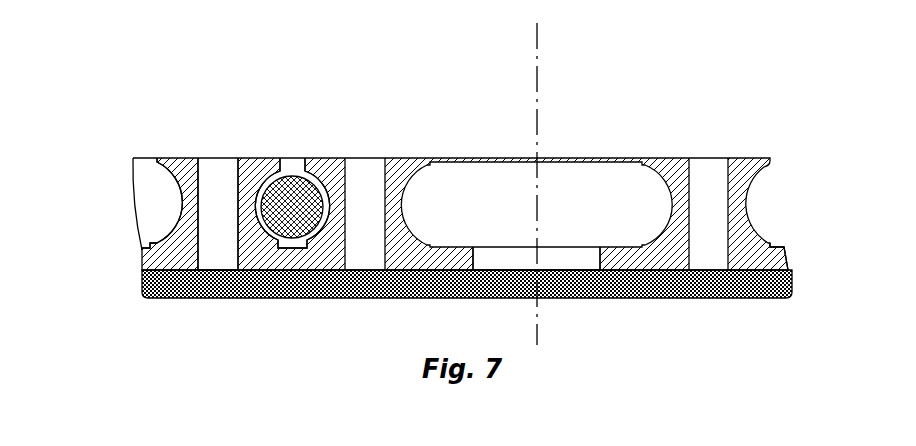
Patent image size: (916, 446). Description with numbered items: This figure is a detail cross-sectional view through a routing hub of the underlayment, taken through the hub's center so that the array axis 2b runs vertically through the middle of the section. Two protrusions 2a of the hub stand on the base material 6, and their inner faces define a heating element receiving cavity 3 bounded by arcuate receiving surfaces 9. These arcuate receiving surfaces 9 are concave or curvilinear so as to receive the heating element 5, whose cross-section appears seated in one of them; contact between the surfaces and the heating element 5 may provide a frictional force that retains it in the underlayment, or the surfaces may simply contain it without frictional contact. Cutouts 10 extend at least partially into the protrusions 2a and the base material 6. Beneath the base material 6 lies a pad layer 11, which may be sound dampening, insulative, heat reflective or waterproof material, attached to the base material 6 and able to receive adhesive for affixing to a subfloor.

The protrusion 2a is at (792, 248).
The array axis 2b is at (540, 116).
The heating element receiving cavity 3 is at (294, 158).
The heating element 5 is at (292, 210).
The base material 6 is at (787, 258).
The arcuate receiving surface 9 is at (178, 210).
The cutout 10 is at (210, 272).
The pad layer 11 is at (762, 297).